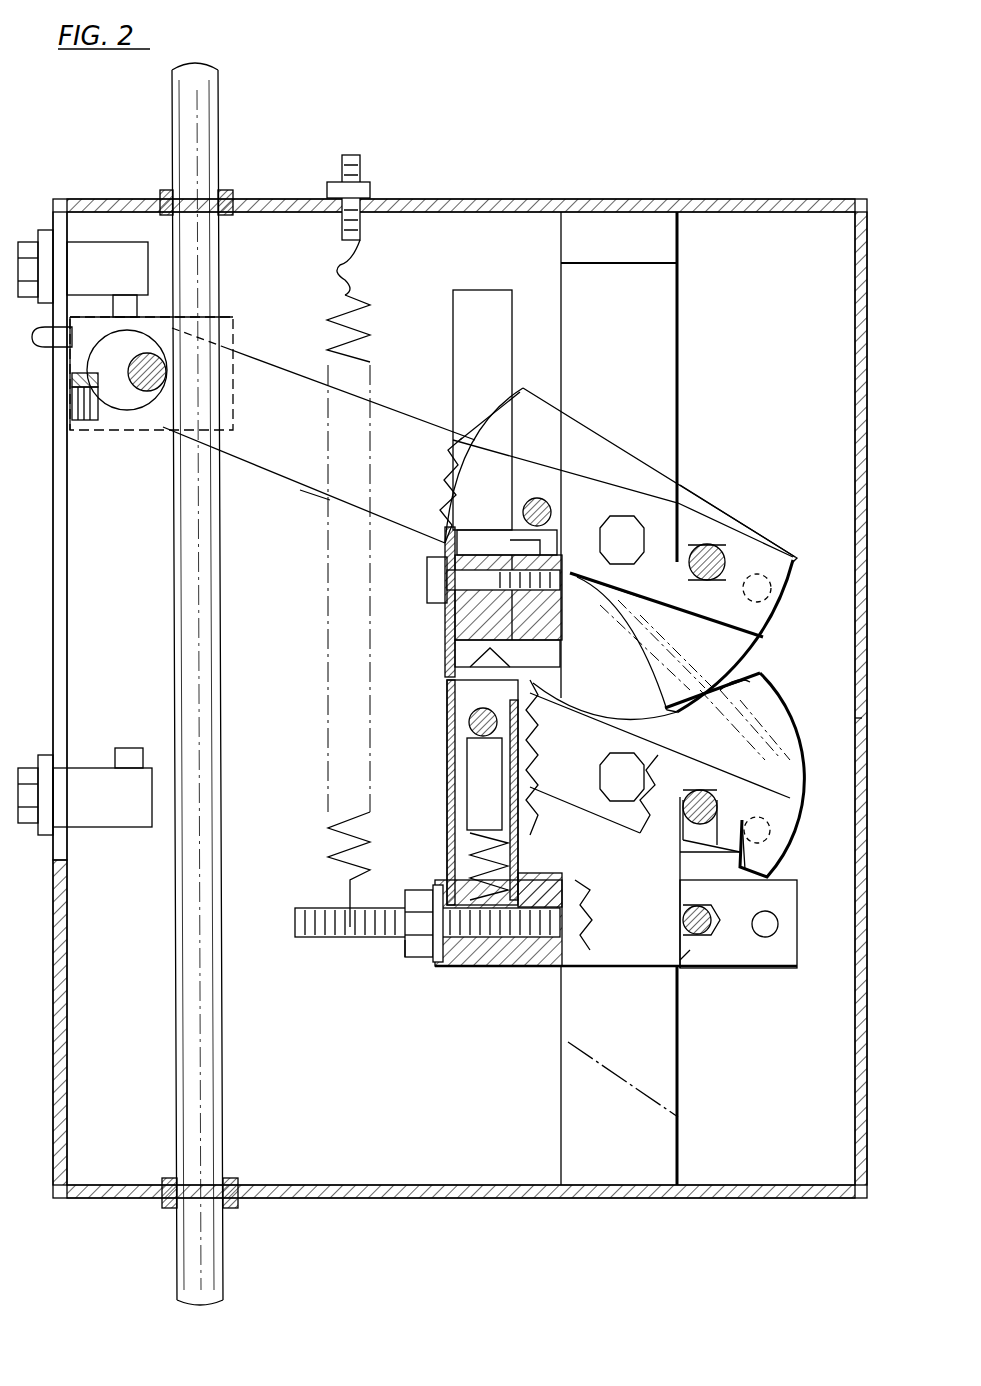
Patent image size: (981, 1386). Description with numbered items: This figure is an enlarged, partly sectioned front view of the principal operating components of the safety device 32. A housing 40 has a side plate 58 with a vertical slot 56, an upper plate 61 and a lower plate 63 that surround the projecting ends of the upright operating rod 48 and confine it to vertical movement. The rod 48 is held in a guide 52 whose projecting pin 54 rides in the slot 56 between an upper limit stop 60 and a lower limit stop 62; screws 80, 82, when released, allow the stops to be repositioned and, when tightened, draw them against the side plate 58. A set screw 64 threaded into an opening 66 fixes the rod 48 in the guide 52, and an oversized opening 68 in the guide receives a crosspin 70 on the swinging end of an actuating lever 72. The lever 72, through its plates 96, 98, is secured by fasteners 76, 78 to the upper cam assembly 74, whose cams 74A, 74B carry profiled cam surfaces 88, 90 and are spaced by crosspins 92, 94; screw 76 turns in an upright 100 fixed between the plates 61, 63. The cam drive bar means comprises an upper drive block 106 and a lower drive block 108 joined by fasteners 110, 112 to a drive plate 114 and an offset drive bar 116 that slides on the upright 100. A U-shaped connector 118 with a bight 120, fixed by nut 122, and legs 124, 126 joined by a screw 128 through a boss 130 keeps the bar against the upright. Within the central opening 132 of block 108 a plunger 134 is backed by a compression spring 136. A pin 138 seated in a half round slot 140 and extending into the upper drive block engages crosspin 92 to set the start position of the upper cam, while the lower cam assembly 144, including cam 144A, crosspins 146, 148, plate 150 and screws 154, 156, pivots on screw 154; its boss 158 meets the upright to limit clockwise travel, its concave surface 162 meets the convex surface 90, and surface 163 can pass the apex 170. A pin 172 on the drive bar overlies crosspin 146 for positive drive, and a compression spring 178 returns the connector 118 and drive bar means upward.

The safety device 32 is at (636, 190).
The housing 40 is at (424, 200).
The operating rod 48 is at (204, 154).
The guide 52 is at (88, 317).
The projecting pin 54 is at (45, 347).
The vertical slot 56 is at (67, 540).
The side plate 58 is at (67, 1130).
The upper limit stop 60 is at (98, 258).
The upper plate 61 is at (515, 199).
The lower limit stop 62 is at (118, 807).
The lower plate 63 is at (430, 1186).
The set screw 64 is at (70, 420).
The opening 66 is at (130, 425).
The oversized opening 68 is at (72, 376).
The crosspin 70 is at (162, 384).
The actuating lever 72 is at (284, 422).
The upper cam assembly 74 is at (733, 644).
The cam 74A is at (546, 447).
The cam 74B is at (693, 505).
The fastener 76 is at (622, 535).
The fastener 78 is at (718, 555).
The screw 80 is at (35, 242).
The screw 82 is at (35, 770).
The cam surface 88 is at (632, 624).
The convex cam surface 90 is at (762, 678).
The crosspin 92 is at (546, 505).
The crosspin 94 is at (790, 590).
The plate 96 is at (432, 517).
The plate 98 is at (348, 489).
The upright 100 is at (636, 1046).
The upper drive block 106 is at (498, 337).
The lower drive block 108 is at (455, 840).
The threaded fastener 110 is at (428, 576).
The threaded fastener 112 is at (316, 907).
The drive plate 114 is at (445, 650).
The drive bar 116 is at (540, 866).
The U-shaped connector 118 is at (757, 962).
The connecting bight 120 is at (426, 892).
The nut 122 is at (418, 946).
The connector leg 124 is at (596, 952).
The connector leg 126 is at (655, 920).
The screw 128 is at (712, 915).
The boss 130 is at (688, 950).
The central opening 132 is at (520, 842).
The plunger 134 is at (466, 760).
The compression spring 136 is at (462, 860).
The pin 138 is at (553, 545).
The half round slot 140 is at (590, 566).
The lower cam assembly 144 is at (763, 751).
The cam 144A is at (770, 776).
The crosspin 146 is at (470, 718).
The crosspin 148 is at (790, 843).
The plate 150 is at (574, 742).
The screw 154 is at (640, 778).
The screw 156 is at (778, 806).
The boss 158 is at (722, 848).
The concave cam surface 162 is at (770, 700).
The lower cam surface 163 is at (855, 718).
The cam profile apex 170 is at (648, 703).
The pin 172 is at (562, 652).
The compression spring 178 is at (330, 828).